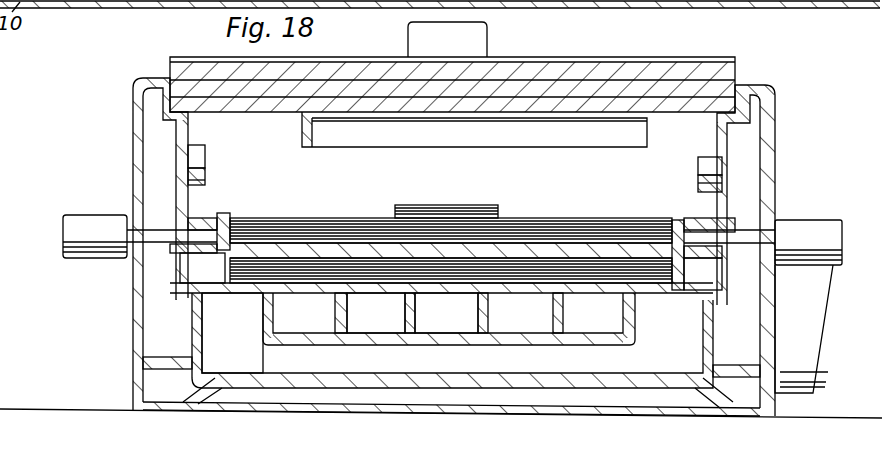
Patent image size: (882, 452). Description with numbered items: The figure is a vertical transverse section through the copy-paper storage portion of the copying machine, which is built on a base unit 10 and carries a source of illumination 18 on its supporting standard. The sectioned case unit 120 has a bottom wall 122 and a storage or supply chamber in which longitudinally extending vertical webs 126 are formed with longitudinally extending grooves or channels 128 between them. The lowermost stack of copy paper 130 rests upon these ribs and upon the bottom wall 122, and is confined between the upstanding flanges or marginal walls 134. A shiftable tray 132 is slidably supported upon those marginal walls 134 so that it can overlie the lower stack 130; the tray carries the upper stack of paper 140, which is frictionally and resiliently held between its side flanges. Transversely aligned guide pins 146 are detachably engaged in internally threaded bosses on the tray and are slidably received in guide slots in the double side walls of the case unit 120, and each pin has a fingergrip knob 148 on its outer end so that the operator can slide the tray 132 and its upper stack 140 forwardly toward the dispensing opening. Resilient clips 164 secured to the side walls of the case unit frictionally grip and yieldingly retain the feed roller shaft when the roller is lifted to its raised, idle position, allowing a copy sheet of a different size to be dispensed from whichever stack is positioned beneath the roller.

The base unit 10 is at (470, 404).
The source of illumination 18 is at (415, 13).
The case unit 120 is at (773, 160).
The bottom wall 122 is at (203, 294).
The longitudinally extending vertical webs 126 is at (345, 294).
The longitudinally extending grooves or channels 128 is at (422, 294).
The lowermost stack of copy paper 130 is at (532, 275).
The shiftable tray 132 is at (236, 214).
The upstanding flanges or marginal walls 134 is at (222, 283).
The stack of paper 140 is at (512, 235).
The guide pins 146 is at (740, 243).
The fingergrip knob 148 is at (812, 230).
The resilient clips 164 is at (205, 157).